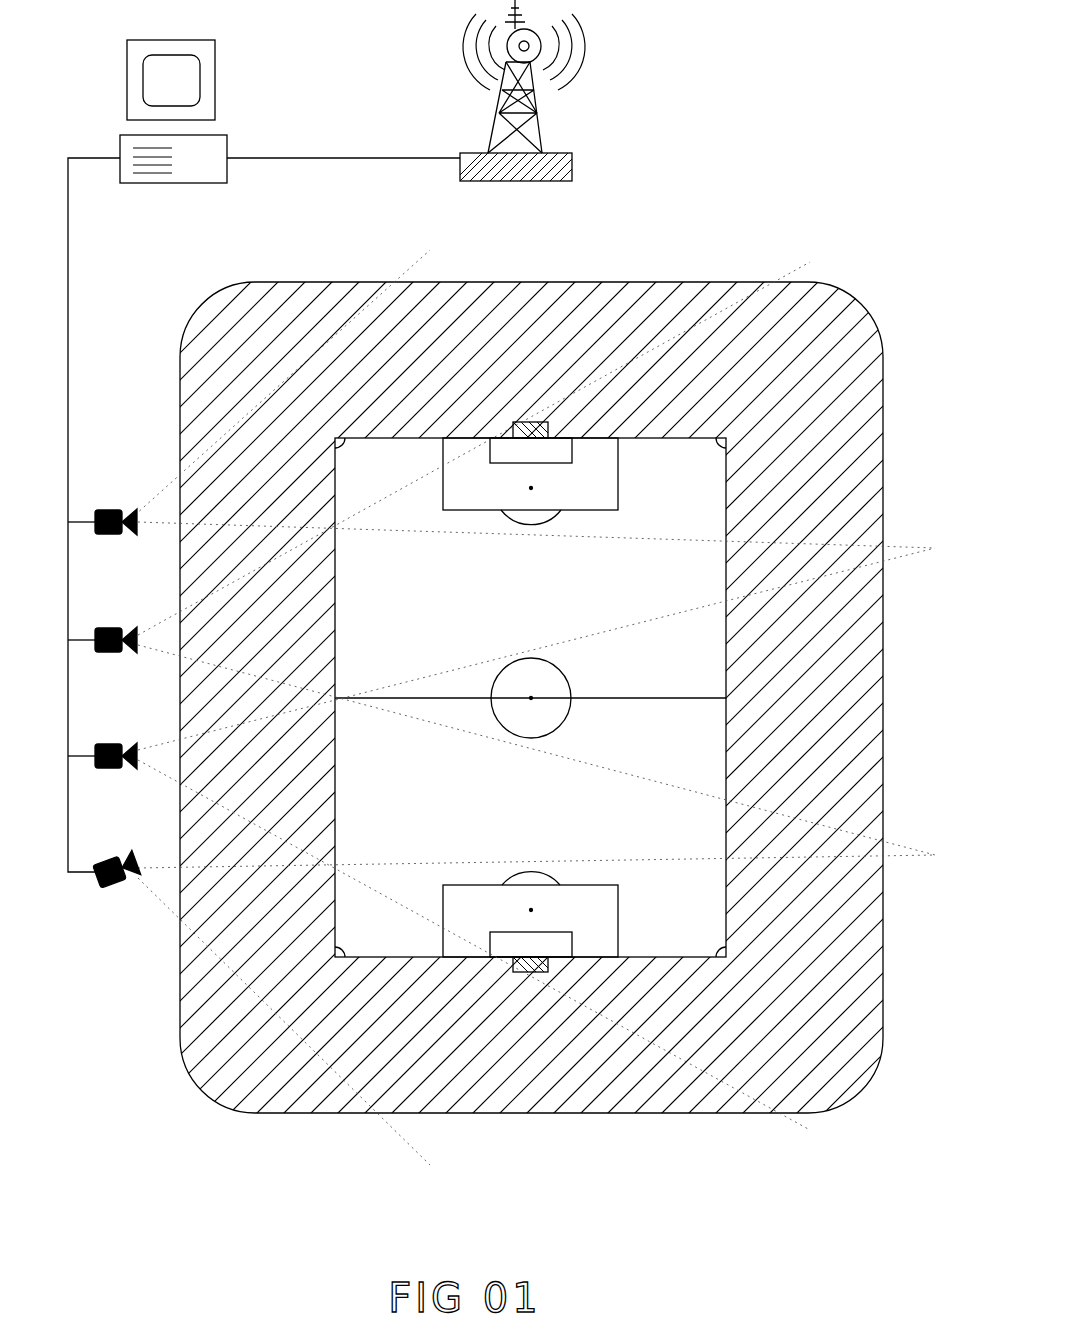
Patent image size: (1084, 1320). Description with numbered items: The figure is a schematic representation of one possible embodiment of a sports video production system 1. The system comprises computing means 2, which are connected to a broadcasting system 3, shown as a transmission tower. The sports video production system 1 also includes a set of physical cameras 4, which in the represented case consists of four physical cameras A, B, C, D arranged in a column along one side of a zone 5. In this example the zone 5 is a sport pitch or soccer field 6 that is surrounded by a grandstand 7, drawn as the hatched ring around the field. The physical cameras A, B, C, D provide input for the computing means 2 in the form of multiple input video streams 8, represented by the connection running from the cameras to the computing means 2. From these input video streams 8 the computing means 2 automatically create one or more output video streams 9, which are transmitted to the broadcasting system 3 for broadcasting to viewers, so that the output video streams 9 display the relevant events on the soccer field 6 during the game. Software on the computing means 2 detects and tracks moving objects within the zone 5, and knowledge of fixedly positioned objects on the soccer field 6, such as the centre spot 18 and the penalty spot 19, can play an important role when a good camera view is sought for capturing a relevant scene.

The sports video production system 1 is at (727, 26).
The computing means 2 is at (138, 52).
The broadcasting system 3 is at (537, 110).
The set of physical cameras 4 is at (116, 787).
The zone 5 is at (584, 313).
The soccer field 6 is at (700, 517).
The grandstand 7 is at (572, 1055).
The input video streams 8 is at (68, 340).
The output video streams 9 is at (345, 157).
The centre spot 18 is at (531, 698).
The penalty spot 19 is at (528, 487).
The physical camera A is at (118, 535).
The physical camera B is at (118, 652).
The physical camera C is at (118, 768).
The physical camera D is at (116, 902).